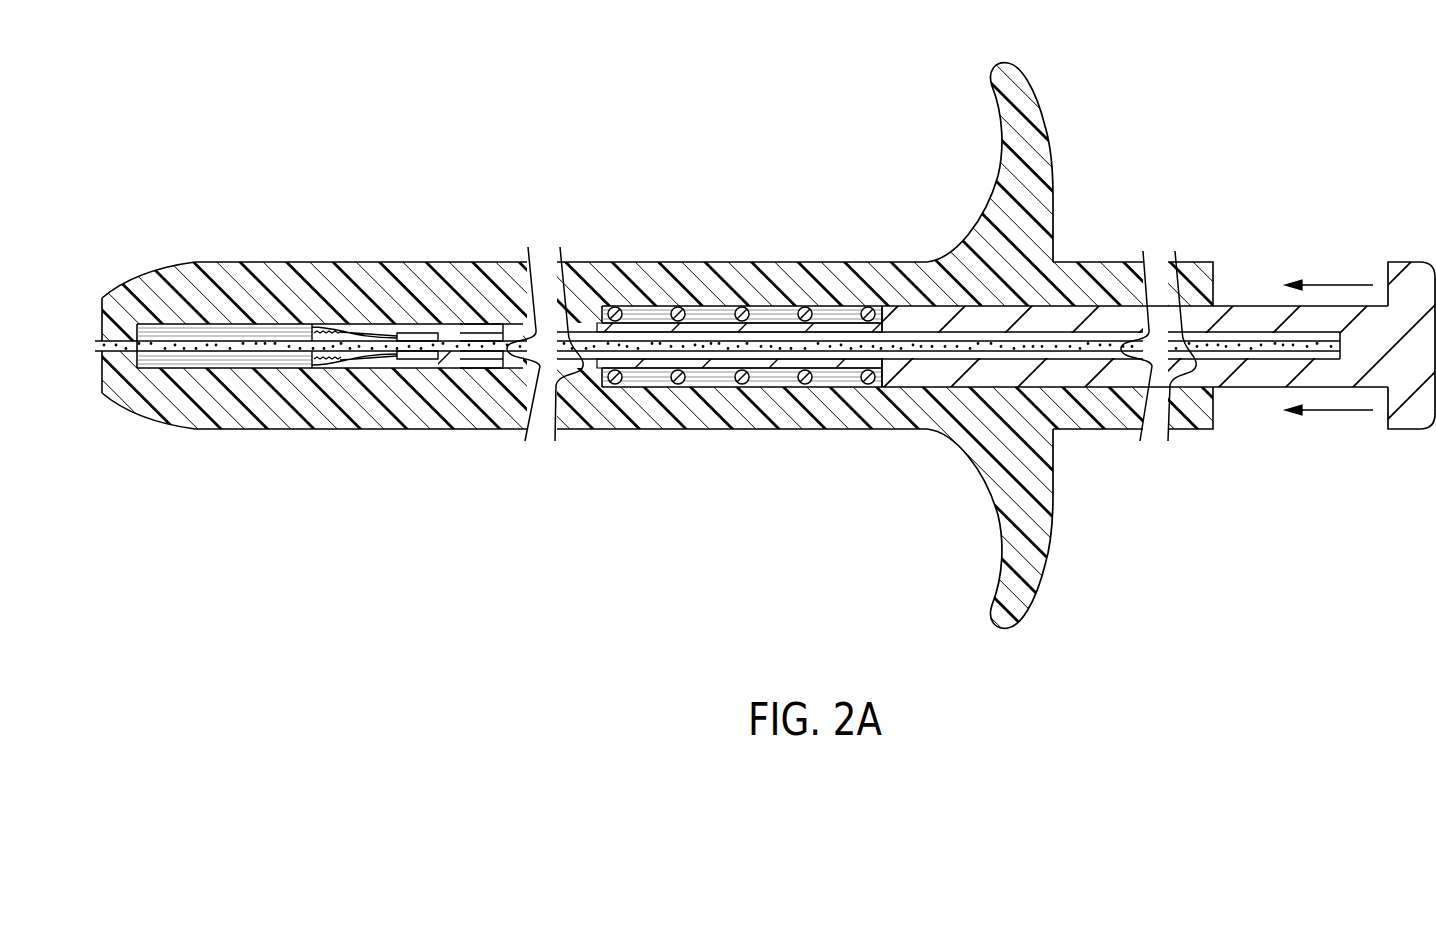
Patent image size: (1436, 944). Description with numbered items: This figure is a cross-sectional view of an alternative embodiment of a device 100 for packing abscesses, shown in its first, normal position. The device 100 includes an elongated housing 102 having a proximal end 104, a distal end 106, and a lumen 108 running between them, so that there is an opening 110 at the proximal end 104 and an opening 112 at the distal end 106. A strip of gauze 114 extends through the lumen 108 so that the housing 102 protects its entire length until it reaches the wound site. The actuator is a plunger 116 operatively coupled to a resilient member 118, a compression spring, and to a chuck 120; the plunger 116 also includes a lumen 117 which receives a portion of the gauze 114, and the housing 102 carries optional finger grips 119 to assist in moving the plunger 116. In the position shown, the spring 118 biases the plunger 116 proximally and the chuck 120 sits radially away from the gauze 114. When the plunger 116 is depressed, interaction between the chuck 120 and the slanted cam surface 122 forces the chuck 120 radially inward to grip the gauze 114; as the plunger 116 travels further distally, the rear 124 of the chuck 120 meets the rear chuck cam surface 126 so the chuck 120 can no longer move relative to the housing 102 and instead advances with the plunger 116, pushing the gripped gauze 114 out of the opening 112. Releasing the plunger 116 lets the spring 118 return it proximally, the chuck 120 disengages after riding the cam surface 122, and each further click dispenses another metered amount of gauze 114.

The device 100 is at (300, 126).
The elongated housing 102 is at (618, 262).
The proximal end 104 is at (1203, 270).
The distal end 106 is at (124, 299).
The lumen 108 is at (244, 367).
The opening 110 is at (1219, 308).
The opening 112 is at (96, 346).
The gauze 114 is at (187, 352).
The plunger 116 is at (1404, 268).
The lumen 117 is at (911, 338).
The resilient member 118 is at (745, 312).
The finger grips 119 is at (1044, 121).
The chuck 120 is at (322, 326).
The slanted cam surface 122 is at (343, 363).
The rear of the chuck 124 is at (406, 334).
The rear chuck cam surface 126 is at (430, 358).